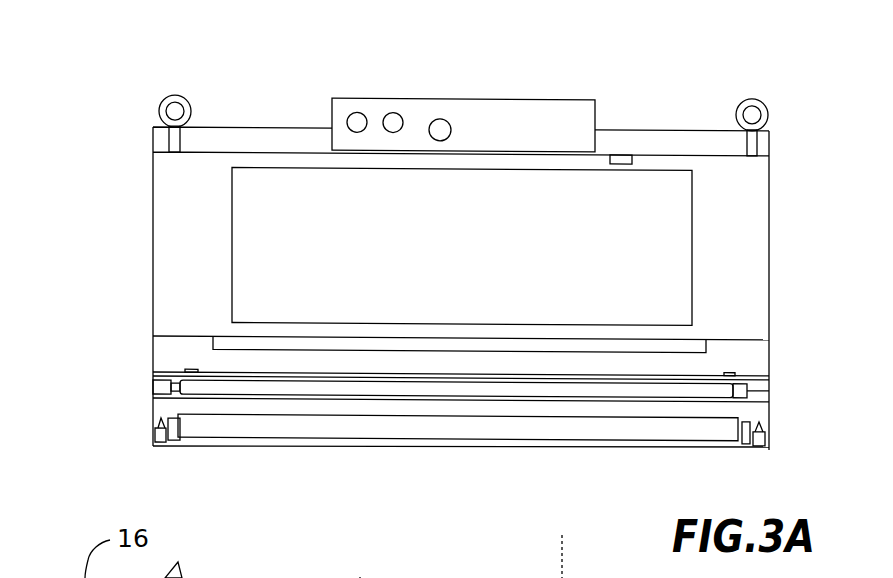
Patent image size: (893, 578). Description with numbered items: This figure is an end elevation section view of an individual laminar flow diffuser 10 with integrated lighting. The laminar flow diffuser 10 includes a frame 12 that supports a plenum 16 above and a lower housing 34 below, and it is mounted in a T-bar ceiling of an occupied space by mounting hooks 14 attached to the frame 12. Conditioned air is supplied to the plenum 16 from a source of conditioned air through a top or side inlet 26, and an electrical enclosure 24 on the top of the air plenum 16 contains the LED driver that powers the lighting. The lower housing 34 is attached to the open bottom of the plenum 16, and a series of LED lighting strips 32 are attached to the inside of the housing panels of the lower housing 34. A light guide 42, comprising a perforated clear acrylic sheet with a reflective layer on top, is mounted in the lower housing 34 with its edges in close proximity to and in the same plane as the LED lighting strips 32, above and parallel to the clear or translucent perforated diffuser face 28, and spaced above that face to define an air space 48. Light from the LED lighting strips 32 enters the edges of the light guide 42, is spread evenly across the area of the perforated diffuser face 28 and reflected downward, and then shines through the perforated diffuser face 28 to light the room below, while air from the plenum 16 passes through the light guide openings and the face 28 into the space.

The laminar flow diffuser 10 is at (212, 60).
The frame 12 is at (360, 577).
The mounting hooks 14 is at (160, 106).
The plenum 16 is at (153, 260).
The electrical enclosure 24 is at (473, 117).
The inlet 26 is at (633, 190).
The perforated diffuser face 28 is at (627, 447).
The LED lighting strips 32 is at (153, 390).
The lower housing 34 is at (152, 357).
The light guide 42 is at (420, 390).
The air space 48 is at (485, 418).